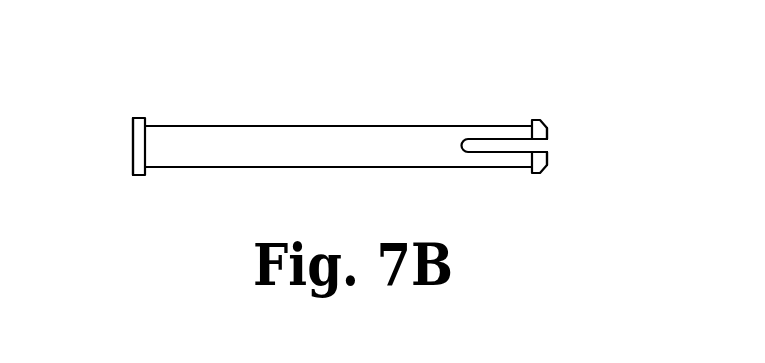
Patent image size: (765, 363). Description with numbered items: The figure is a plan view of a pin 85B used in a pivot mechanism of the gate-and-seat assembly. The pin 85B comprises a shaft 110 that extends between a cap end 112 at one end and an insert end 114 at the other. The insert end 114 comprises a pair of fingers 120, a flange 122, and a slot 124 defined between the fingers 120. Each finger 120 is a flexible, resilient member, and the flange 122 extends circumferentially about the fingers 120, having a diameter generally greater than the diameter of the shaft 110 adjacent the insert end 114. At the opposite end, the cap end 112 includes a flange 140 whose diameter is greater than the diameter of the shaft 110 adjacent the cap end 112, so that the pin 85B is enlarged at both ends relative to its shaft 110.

The pin 85B is at (298, 124).
The shaft 110 is at (395, 126).
The cap end 112 is at (133, 160).
The insert end 114 is at (547, 132).
The fingers 120 is at (502, 128).
The flange 122 is at (536, 120).
The slot 124 is at (548, 146).
The flange 140 is at (138, 118).